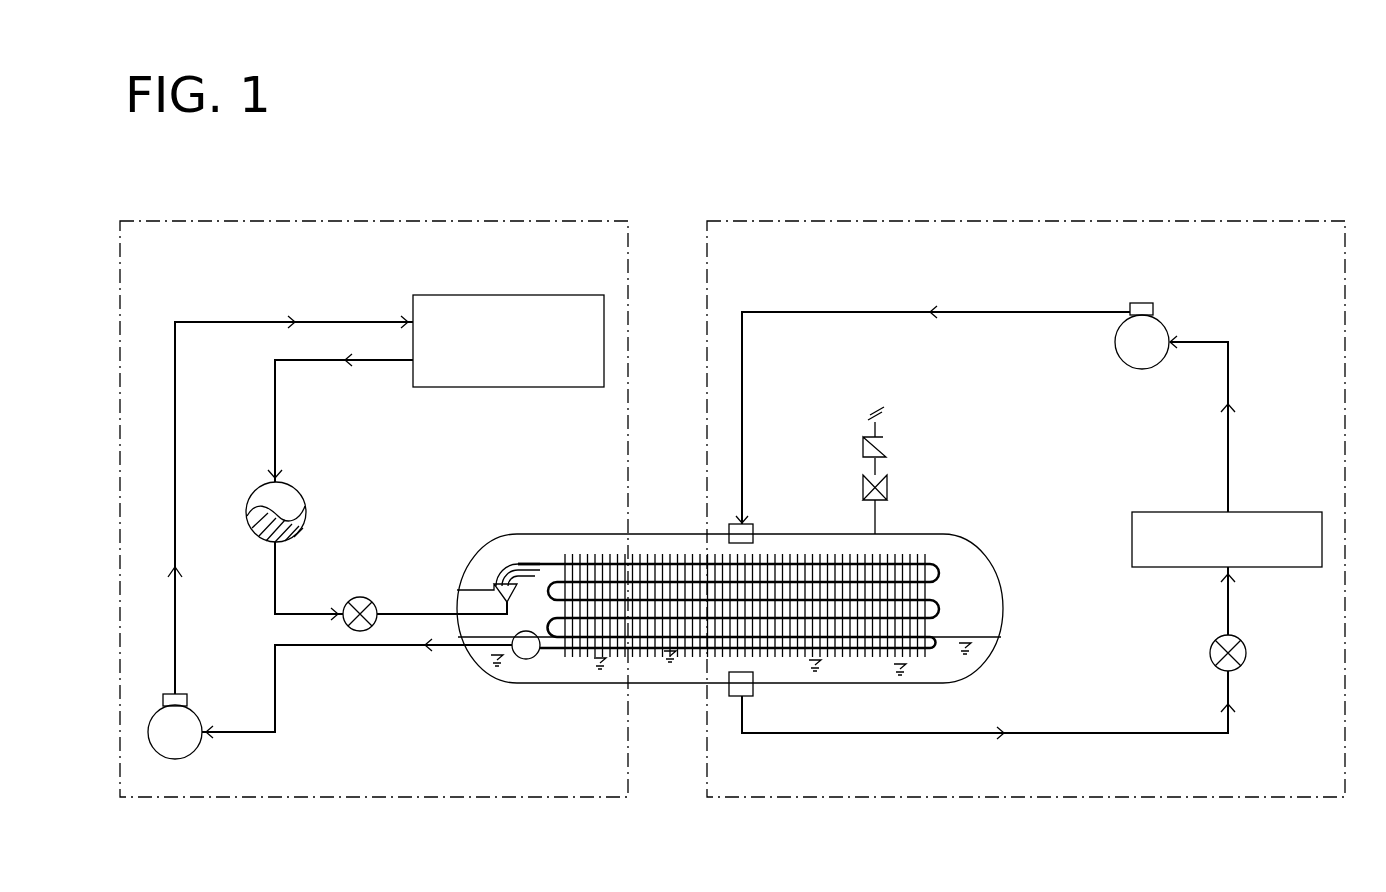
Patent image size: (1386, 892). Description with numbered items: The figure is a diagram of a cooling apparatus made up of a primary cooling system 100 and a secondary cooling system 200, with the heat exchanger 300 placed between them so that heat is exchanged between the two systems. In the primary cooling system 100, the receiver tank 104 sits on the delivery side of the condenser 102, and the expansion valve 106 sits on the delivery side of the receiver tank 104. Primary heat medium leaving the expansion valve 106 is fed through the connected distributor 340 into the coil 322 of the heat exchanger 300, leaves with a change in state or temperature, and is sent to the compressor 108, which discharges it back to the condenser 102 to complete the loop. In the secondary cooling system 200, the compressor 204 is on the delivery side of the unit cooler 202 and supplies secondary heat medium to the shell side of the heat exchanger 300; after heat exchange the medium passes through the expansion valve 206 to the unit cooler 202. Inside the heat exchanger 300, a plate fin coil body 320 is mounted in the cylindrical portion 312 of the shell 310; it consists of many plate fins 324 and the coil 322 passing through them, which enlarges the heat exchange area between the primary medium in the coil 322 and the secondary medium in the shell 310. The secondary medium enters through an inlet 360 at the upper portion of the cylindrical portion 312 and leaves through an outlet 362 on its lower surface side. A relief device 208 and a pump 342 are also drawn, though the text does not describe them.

The primary cooling system 100 is at (207, 182).
The condenser 102 is at (558, 295).
The receiver tank 104 is at (302, 490).
The expansion valve 106 is at (360, 597).
The compressor 108 is at (195, 755).
The secondary cooling system 200 is at (1312, 182).
The unit cooler 202 is at (1282, 512).
The compressor 204 is at (1116, 352).
The expansion valve 206 is at (1210, 656).
The relief valve 208 is at (890, 445).
The heat exchanger 300 is at (699, 618).
The shell 310 is at (730, 579).
The cylindrical portion 312 is at (664, 534).
The plate fin coil body 320 is at (728, 599).
The coil 322 is at (553, 560).
The plate fins 324 is at (797, 660).
The distributor 340 is at (492, 592).
The circulation pump 342 is at (522, 660).
The inlet 360 is at (754, 524).
The outlet 362 is at (733, 697).